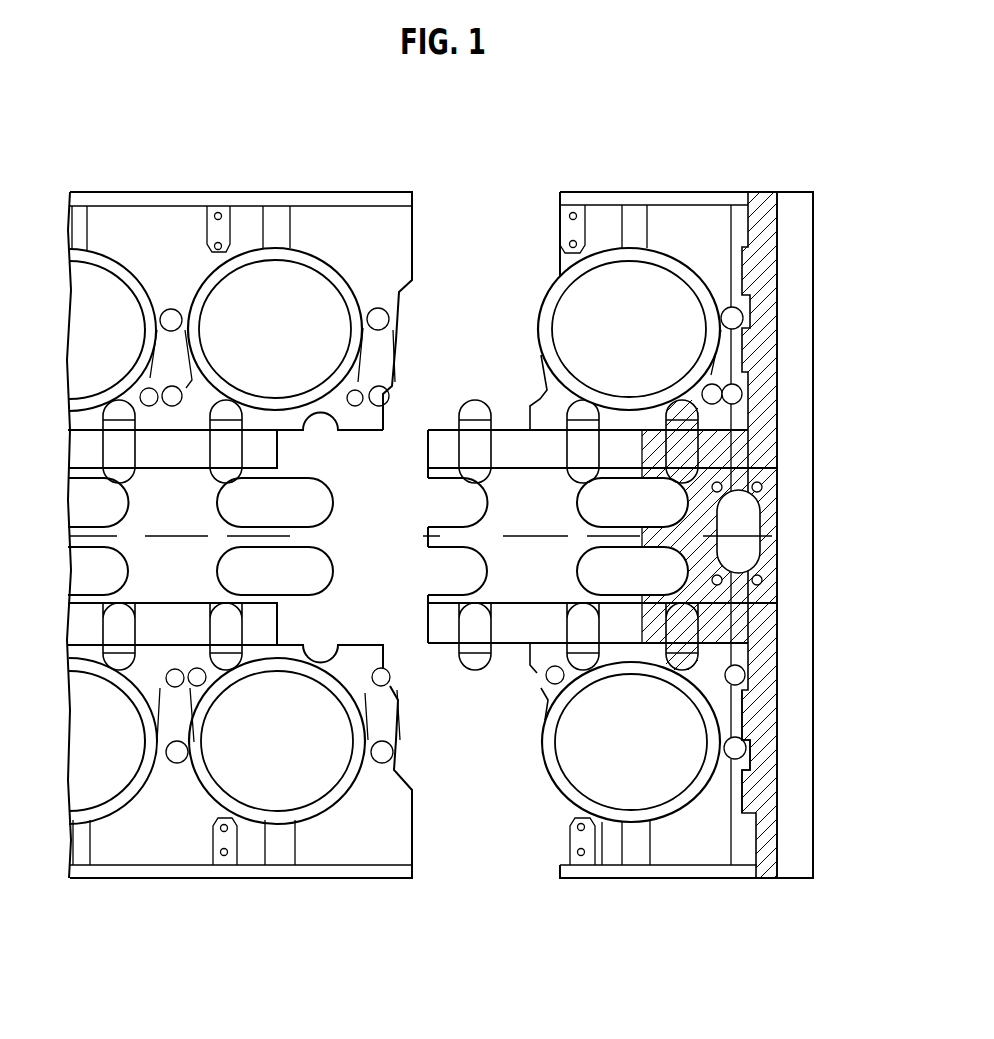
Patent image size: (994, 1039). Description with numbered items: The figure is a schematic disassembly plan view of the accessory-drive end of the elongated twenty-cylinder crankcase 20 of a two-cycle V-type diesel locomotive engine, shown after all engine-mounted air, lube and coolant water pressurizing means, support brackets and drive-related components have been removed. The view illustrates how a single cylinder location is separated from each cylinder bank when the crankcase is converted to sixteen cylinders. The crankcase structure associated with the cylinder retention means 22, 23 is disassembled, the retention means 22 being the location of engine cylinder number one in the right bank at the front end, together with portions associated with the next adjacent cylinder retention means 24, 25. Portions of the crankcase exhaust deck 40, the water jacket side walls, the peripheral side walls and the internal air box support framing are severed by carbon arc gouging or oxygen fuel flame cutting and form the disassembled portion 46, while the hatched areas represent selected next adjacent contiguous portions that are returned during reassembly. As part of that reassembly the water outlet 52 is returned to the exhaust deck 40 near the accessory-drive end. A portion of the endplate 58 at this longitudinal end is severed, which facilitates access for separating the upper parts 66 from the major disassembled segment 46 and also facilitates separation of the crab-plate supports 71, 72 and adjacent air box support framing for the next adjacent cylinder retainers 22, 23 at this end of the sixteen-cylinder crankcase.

The twenty-cylinder crankcase 20 is at (440, 222).
The cylinder retention means 22 is at (656, 758).
The cylinder retention means 23 is at (655, 322).
The next adjacent cylinder retention means 24 is at (302, 760).
The next adjacent cylinder retention means 25 is at (302, 322).
The crankcase exhaust deck 40 is at (188, 513).
The disassembled portion 46 is at (661, 164).
The water outlet 52 is at (745, 510).
The endplate 58 is at (796, 205).
The upper parts 66 is at (735, 550).
The crab-plate support 71 is at (762, 205).
The crab-plate support 72 is at (760, 705).